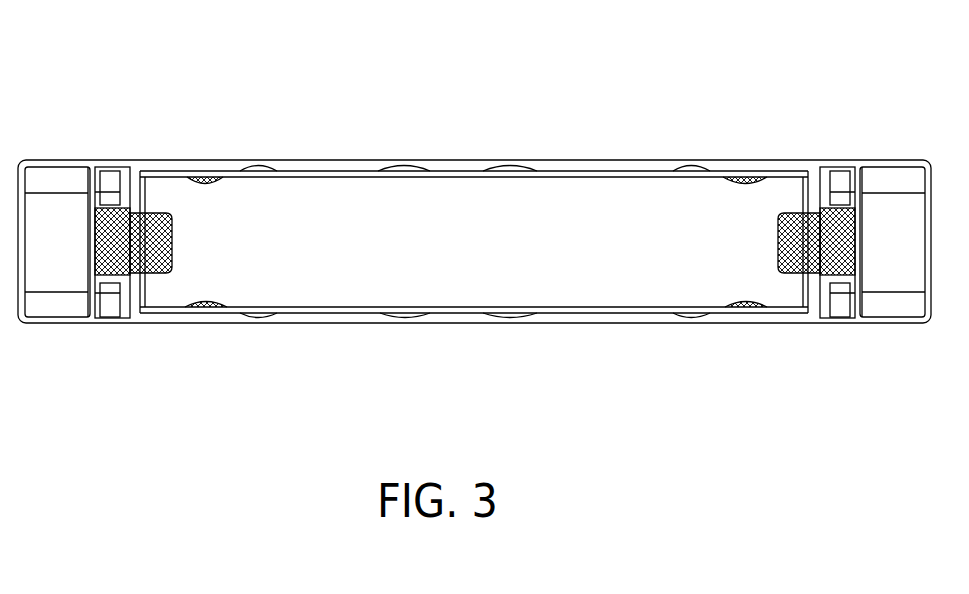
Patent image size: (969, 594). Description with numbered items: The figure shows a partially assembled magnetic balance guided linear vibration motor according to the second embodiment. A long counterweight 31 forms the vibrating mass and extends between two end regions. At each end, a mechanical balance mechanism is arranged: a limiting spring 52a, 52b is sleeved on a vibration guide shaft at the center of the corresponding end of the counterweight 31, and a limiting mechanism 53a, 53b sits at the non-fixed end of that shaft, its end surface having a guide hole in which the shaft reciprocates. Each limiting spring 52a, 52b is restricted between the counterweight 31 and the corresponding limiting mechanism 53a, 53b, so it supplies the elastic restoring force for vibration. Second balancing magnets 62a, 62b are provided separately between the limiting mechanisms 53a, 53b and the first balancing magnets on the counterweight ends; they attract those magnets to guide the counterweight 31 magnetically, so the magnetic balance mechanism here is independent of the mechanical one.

The counterweight 31 is at (315, 233).
The limiting spring 52a is at (143, 215).
The limiting spring 52b is at (795, 213).
The limiting mechanism 53a is at (33, 290).
The limiting mechanism 53b is at (912, 285).
The second balancing magnet 62a is at (103, 170).
The second balancing magnet 62b is at (840, 175).